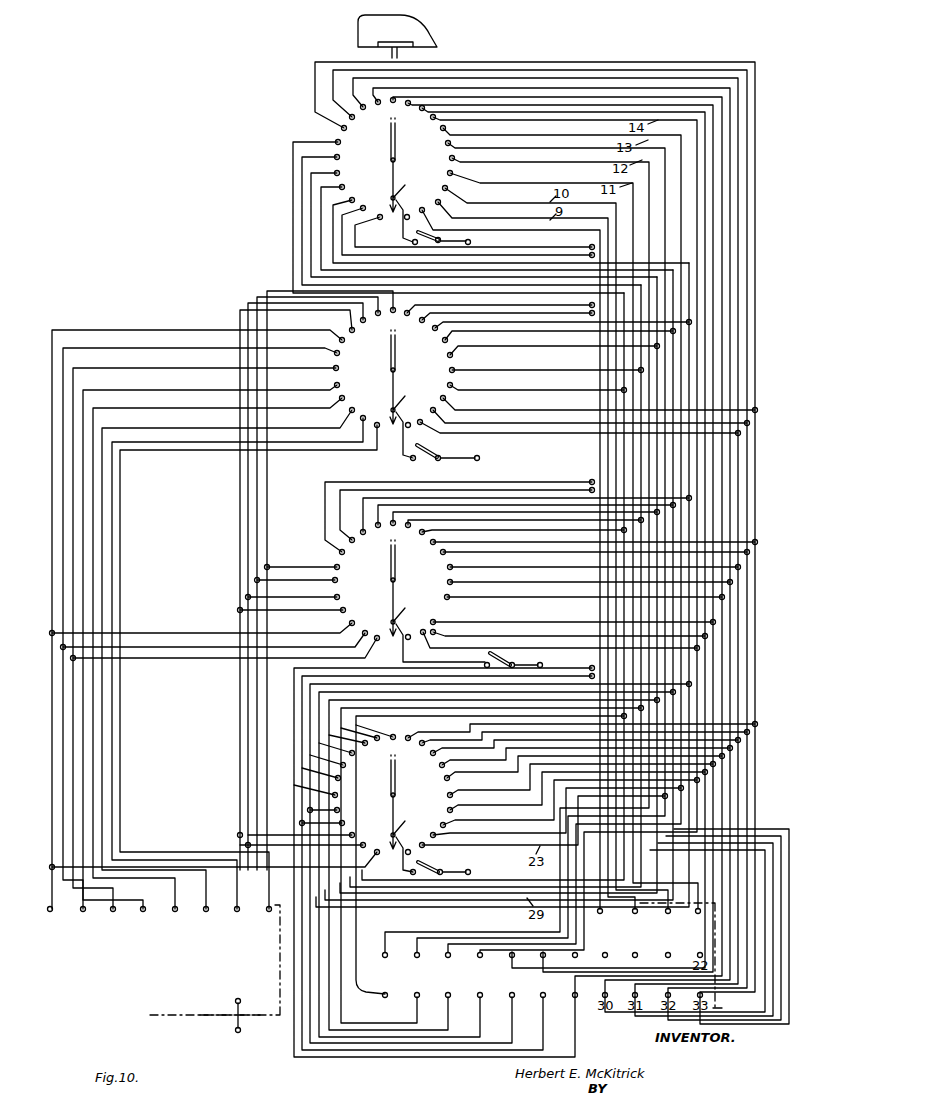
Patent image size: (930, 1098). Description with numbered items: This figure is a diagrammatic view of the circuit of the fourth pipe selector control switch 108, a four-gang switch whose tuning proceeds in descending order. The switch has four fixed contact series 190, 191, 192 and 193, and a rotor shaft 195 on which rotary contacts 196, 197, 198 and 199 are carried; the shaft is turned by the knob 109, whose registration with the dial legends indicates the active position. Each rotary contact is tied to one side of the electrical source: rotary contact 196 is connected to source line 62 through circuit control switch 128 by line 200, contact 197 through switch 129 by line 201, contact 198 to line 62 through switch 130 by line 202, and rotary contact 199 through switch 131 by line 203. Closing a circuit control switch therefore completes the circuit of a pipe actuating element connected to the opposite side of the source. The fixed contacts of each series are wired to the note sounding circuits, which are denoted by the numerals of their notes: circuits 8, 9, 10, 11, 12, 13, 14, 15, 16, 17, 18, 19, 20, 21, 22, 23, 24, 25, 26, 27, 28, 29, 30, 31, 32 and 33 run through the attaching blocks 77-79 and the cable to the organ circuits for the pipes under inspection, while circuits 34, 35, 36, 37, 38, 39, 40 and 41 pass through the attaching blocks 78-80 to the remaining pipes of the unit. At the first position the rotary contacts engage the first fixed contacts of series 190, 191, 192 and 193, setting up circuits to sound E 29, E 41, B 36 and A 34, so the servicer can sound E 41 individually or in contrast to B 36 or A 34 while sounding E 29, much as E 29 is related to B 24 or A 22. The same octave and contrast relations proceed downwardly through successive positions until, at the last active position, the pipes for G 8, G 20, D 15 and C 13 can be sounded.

The note circuit for G- 8 is at (600, 920).
The note circuit 9 is at (635, 920).
The note circuit 10 is at (669, 920).
The note circuit 11 is at (700, 920).
The note circuit 12 is at (385, 963).
The note circuit for C- 13 is at (417, 963).
The note circuit 14 is at (448, 963).
The note circuit for D- 15 is at (480, 963).
The note circuit 16 is at (512, 963).
The note circuit 17 is at (543, 963).
The note circuit 18 is at (575, 963).
The note circuit 19 is at (605, 963).
The note circuit for G- 20 is at (635, 963).
The note circuit 21 is at (668, 963).
The note circuit for A- 22 is at (650, 60).
The note circuit 23 is at (385, 1003).
The note circuit for B- 24 is at (417, 1003).
The note circuit 25 is at (448, 1003).
The note circuit 26 is at (480, 1003).
The note circuit 27 is at (512, 1003).
The note circuit 28 is at (543, 1003).
The note circuit for E- 29 is at (575, 1003).
The note circuit 30 is at (269, 515).
The note circuit 31 is at (259, 495).
The note circuit 32 is at (246, 518).
The note circuit 33 is at (238, 498).
The note circuit for A- 34 is at (108, 336).
The note circuit 35 is at (108, 356).
The note circuit for B- 36 is at (115, 374).
The note circuit 37 is at (125, 394).
The note circuit 38 is at (125, 414).
The note circuit 39 is at (128, 432).
The note circuit 40 is at (146, 446).
The note circuit for E- 41 is at (186, 446).
The source line 62 is at (393, 741).
The attaching blocks 77-79 is at (737, 1009).
The attaching blocks 78-80 is at (188, 1018).
The pipe selector control switch 108 is at (264, 180).
The knob 109 is at (358, 32).
The circuit control switch 128 is at (460, 240).
The circuit control switch 129 is at (446, 450).
The circuit control switch 130 is at (515, 657).
The circuit control switch 131 is at (461, 870).
The fixed contact series 190 is at (287, 156).
The fixed contact series 191 is at (381, 366).
The fixed contact series 192 is at (377, 576).
The fixed contact series 193 is at (377, 789).
The rotor shaft 195 is at (396, 135).
The rotary contact 196 is at (391, 180).
The rotary contact 197 is at (394, 388).
The rotary contact 198 is at (391, 600).
The rotary contact 199 is at (391, 814).
The line 200 is at (410, 211).
The line 201 is at (411, 420).
The line 202 is at (441, 630).
The line 203 is at (412, 837).